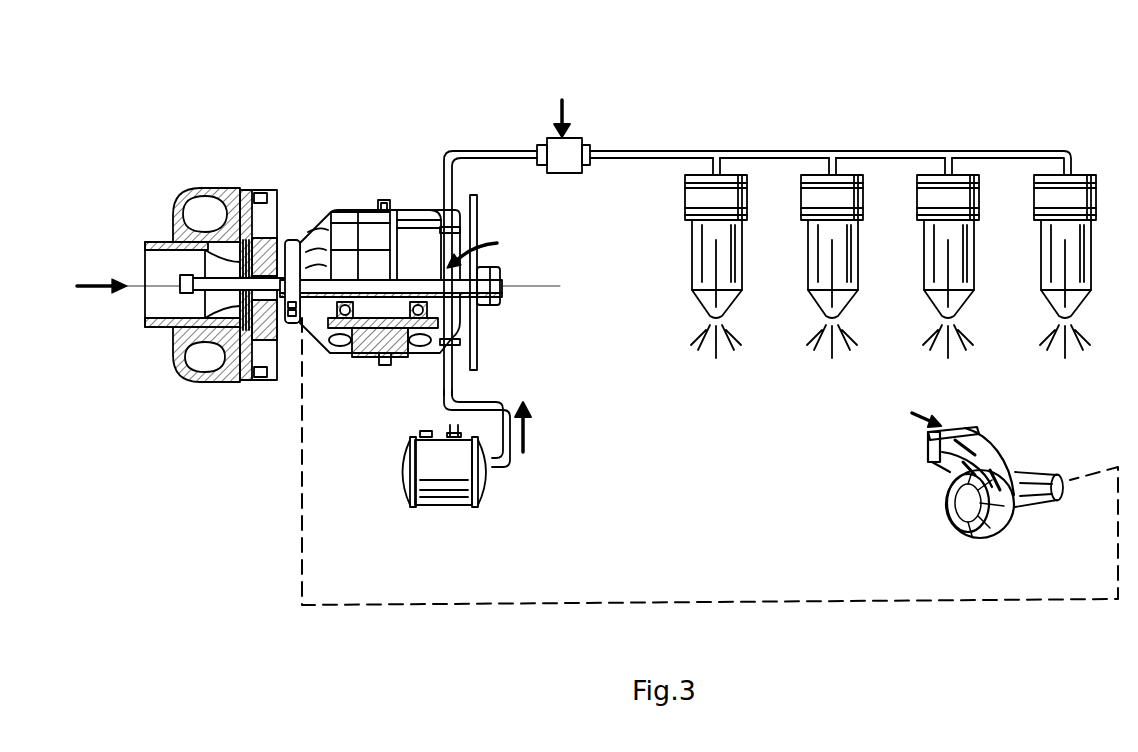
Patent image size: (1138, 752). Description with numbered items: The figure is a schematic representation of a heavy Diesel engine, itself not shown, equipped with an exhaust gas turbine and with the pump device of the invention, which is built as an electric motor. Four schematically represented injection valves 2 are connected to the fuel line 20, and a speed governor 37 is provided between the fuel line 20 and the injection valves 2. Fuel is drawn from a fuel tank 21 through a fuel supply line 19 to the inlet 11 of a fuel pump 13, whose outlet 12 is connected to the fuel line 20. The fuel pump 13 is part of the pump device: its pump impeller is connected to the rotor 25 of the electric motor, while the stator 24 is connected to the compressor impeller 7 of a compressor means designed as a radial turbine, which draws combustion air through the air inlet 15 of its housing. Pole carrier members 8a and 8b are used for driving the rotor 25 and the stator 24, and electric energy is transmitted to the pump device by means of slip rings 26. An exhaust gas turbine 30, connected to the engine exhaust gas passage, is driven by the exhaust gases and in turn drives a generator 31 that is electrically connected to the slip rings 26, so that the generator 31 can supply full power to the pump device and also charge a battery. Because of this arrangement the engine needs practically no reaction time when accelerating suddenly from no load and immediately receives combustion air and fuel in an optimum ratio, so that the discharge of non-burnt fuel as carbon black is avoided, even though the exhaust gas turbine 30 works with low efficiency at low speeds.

The injection valves 2 is at (728, 250).
The compressor impeller 7 is at (222, 270).
The pole carrier member 8a is at (373, 345).
The pole carrier member 8b is at (418, 342).
The inlet 11 is at (458, 342).
The outlet 12 is at (458, 232).
The fuel pump 13 is at (480, 322).
The air inlet 15 is at (158, 303).
The fuel supply line 19 is at (515, 403).
The fuel line 20 is at (492, 152).
The fuel tank 21 is at (485, 478).
The stator 24 is at (375, 283).
The rotor 25 is at (393, 322).
The slip rings 26 is at (282, 352).
The exhaust gas turbine 30 is at (985, 445).
The generator 31 is at (1035, 480).
The speed governor 37 is at (585, 142).